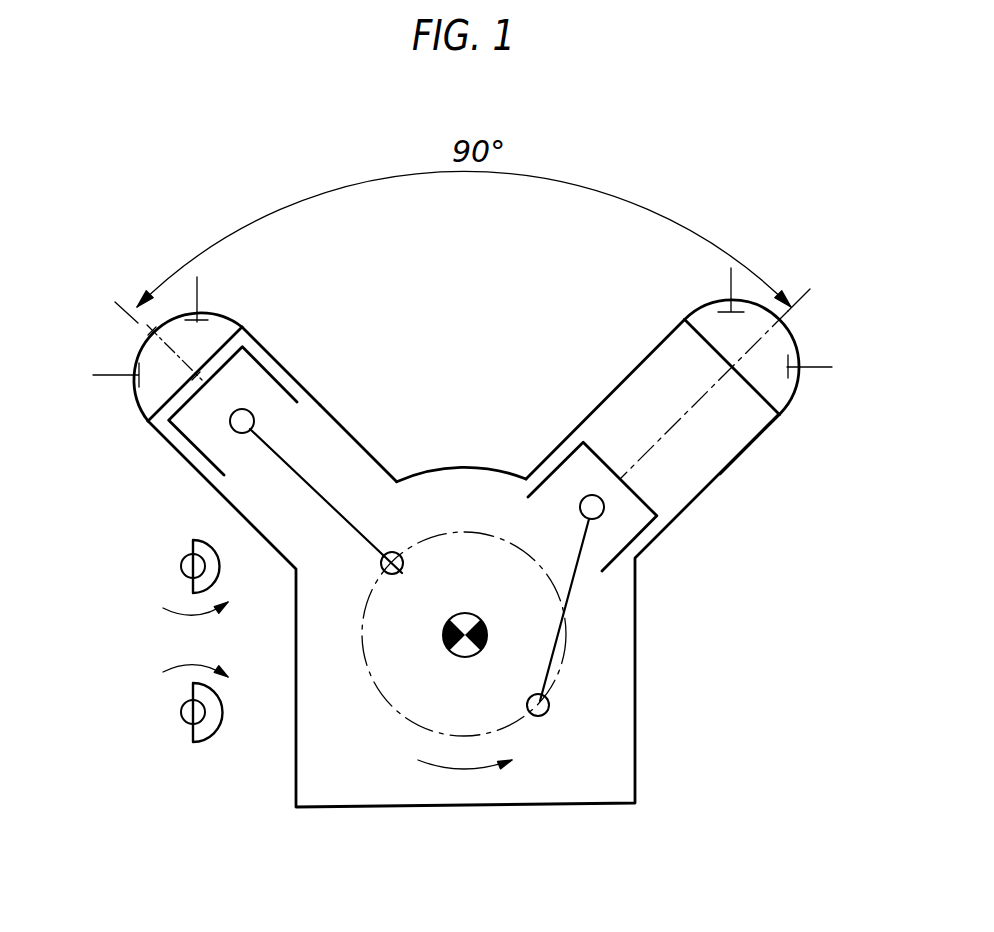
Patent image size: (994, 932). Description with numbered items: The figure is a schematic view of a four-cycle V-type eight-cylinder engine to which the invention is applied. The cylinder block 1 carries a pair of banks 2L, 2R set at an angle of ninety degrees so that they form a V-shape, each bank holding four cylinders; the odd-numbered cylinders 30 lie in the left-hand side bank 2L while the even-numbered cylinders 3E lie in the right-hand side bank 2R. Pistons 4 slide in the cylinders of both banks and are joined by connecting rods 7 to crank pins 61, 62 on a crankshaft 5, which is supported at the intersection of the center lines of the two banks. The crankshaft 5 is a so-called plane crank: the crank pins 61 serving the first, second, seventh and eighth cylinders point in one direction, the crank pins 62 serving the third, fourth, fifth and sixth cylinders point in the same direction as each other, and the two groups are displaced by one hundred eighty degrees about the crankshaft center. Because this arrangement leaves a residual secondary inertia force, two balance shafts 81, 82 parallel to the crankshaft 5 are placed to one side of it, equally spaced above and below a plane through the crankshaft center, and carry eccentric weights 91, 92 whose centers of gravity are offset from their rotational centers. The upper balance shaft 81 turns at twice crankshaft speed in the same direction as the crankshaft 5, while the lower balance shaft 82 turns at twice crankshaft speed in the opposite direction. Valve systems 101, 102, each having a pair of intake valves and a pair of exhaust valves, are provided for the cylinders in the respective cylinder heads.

The cylinder block 1 is at (466, 466).
The left-hand side bank 2L is at (266, 351).
The right-hand side bank 2R is at (622, 383).
The odd-numbered cylinders 30 is at (366, 456).
The even-numbered cylinders 3E is at (760, 422).
The piston 4 is at (188, 459).
The crankshaft 5 is at (447, 646).
The crank pin 61 is at (381, 568).
The crank pin 62 is at (547, 716).
The connecting rod 7 is at (343, 517).
The upper balance shaft 81 is at (181, 565).
The lower balance shaft 82 is at (181, 713).
The eccentric weight 91 is at (221, 570).
The eccentric weight 92 is at (222, 713).
The valve system 101 is at (125, 340).
The valve system 102 is at (812, 338).